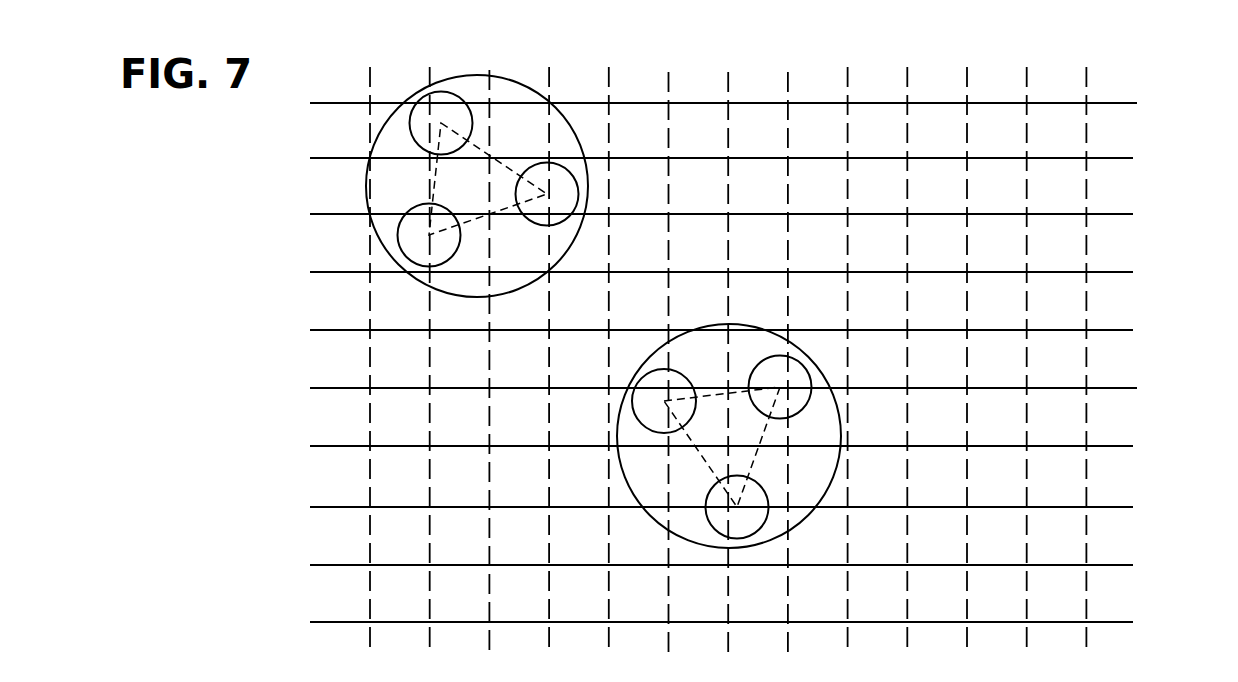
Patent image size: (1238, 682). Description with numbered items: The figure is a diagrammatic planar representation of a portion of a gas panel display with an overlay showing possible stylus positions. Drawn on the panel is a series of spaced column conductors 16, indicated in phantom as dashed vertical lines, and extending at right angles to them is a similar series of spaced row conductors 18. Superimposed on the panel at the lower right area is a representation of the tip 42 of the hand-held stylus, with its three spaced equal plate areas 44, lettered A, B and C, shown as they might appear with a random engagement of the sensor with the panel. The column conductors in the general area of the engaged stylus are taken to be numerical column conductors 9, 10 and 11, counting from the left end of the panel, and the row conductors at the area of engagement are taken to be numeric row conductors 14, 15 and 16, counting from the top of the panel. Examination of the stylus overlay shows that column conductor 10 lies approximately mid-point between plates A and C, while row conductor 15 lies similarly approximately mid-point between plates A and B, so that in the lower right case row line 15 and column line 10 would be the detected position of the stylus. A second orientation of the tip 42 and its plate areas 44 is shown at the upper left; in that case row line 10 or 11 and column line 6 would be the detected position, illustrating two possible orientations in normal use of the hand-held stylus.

The column conductor 6 is at (490, 70).
The column conductor 9 is at (668, 72).
The column conductor 10 is at (728, 72).
The column conductor 11 is at (788, 72).
The row conductor 14 is at (1120, 388).
The row conductor 15 is at (1127, 447).
The column conductors 16 is at (1125, 507).
The row conductors 18 is at (1118, 157).
The tip of the hand-held stylus 42 is at (422, 92).
The plate areas 44 is at (648, 375).